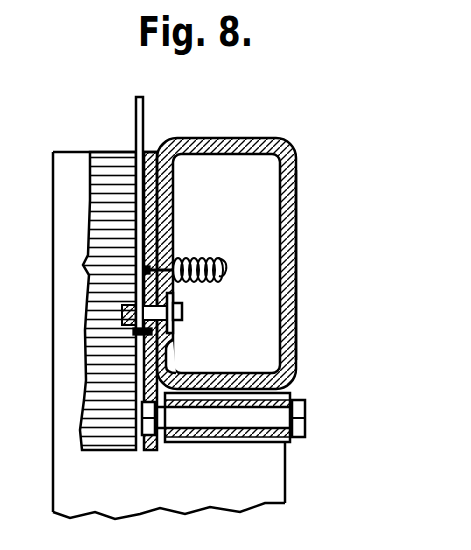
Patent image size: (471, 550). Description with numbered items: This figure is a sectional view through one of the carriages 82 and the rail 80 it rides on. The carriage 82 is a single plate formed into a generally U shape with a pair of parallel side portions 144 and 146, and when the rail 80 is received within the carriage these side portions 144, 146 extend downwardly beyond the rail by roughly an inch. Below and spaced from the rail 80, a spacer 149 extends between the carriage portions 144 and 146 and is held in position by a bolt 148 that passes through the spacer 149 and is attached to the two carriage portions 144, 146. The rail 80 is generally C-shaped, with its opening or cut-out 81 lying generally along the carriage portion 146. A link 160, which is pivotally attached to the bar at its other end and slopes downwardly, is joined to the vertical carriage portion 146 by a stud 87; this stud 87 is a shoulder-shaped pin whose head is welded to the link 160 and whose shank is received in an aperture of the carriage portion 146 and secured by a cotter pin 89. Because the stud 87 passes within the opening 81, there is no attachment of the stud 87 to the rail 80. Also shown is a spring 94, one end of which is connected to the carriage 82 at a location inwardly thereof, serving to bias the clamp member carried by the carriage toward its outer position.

The link 160 is at (135, 105).
The carriage 82 is at (243, 137).
The rail 80 is at (195, 157).
The side portion 146 is at (168, 205).
The side portion 144 is at (297, 210).
The spring 94 is at (198, 256).
The stud 87 is at (182, 311).
The cotter pin 89 is at (182, 327).
The opening 81 is at (173, 347).
The bolt 148 is at (307, 410).
The spacer 149 is at (196, 440).